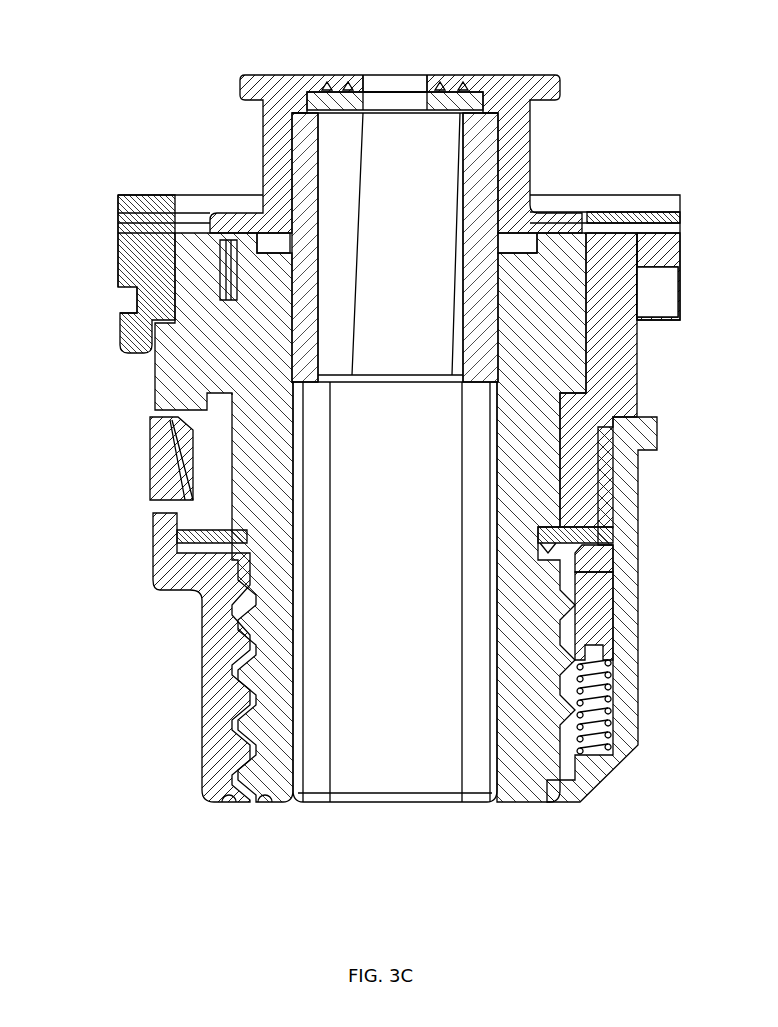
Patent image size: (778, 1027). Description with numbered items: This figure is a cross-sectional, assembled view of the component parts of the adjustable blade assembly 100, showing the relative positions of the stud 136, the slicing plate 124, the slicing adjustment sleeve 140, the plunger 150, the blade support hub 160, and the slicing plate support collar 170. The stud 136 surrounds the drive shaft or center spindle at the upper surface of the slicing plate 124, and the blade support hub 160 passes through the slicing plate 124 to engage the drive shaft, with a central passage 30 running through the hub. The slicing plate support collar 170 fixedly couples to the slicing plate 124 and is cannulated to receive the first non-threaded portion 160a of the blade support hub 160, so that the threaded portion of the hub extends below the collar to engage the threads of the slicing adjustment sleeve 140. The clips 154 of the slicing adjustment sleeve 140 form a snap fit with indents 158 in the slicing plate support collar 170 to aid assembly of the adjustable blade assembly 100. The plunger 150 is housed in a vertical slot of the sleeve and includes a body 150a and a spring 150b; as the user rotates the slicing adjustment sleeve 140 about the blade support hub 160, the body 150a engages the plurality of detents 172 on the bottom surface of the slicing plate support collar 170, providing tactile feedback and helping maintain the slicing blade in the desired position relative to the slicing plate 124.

The adjustable blade assembly 100 is at (80, 66).
The stud 136 is at (512, 160).
The slicing plate 124 is at (655, 218).
The slicing plate support collar 170 is at (605, 355).
The blade support hub 160 is at (270, 440).
The first non-threaded portion 160a is at (248, 378).
The indents 158 is at (195, 480).
The clips 154 is at (607, 478).
The detents 172 is at (605, 530).
The plunger 150 is at (595, 570).
The body 150a is at (595, 635).
The spring 150b is at (595, 700).
The slicing adjustment sleeve 140 is at (225, 632).
The nozzle 30 is at (385, 775).